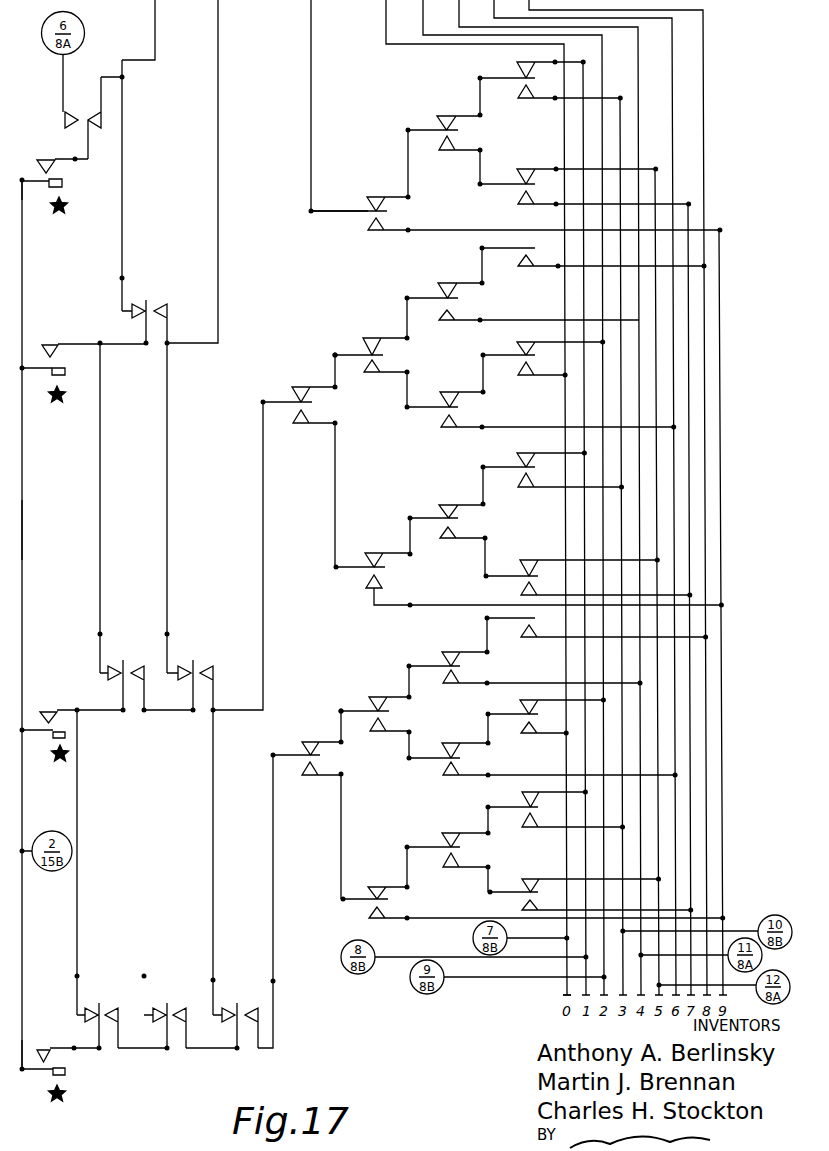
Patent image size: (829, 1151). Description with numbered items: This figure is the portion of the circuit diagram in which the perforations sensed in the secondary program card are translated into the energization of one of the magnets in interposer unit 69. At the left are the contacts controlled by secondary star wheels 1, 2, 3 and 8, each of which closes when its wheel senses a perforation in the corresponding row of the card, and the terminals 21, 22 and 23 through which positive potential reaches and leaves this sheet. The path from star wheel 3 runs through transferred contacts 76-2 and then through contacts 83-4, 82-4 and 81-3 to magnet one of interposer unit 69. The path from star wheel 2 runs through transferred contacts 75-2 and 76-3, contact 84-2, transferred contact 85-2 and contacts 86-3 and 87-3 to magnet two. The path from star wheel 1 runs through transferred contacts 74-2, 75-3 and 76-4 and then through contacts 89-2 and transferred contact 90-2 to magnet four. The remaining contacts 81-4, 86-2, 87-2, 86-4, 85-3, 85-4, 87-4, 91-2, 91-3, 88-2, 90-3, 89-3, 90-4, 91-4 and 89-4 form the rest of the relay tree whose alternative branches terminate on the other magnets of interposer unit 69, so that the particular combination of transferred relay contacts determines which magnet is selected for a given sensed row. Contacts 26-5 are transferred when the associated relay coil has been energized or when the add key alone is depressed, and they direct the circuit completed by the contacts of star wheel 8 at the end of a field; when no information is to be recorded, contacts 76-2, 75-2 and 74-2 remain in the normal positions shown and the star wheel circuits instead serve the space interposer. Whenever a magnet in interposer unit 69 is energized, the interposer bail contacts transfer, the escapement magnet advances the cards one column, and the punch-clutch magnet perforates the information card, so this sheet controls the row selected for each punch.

The terminal 21 is at (15, 109).
The terminal 22 is at (14, 530).
The terminal 23 is at (13, 1054).
The secondary star wheel 8 is at (58, 170).
The secondary star wheel 3 is at (58, 356).
The secondary star wheel 2 is at (56, 722).
The secondary star wheel 1 is at (56, 1063).
The contacts 26-5 is at (92, 106).
The transferred contacts 76-2 is at (176, 292).
The transferred contacts 75-2 is at (150, 654).
The transferred contacts 76-3 is at (224, 654).
The transferred contacts 74-2 is at (132, 996).
The transferred contacts 75-3 is at (197, 996).
The transferred contacts 76-4 is at (264, 996).
The contacts 82-4 is at (433, 117).
The contacts 81-3 is at (510, 95).
The contacts 83-4 is at (363, 196).
The contacts 81-4 is at (515, 200).
The contacts 86-2 is at (452, 265).
The contacts 87-2 is at (510, 270).
The transferred contact 85-2 is at (360, 322).
The contacts 86-3 is at (436, 391).
The contacts 87-3 is at (512, 378).
The contact 84-2 is at (311, 412).
The contacts 86-4 is at (436, 510).
The contacts 85-3 is at (514, 482).
The contacts 85-4 is at (518, 565).
The contacts 87-4 is at (382, 562).
The contacts 91-2 is at (515, 628).
The transferred contact 90-2 is at (460, 660).
The contacts 89-2 is at (388, 706).
The contacts 91-3 is at (518, 726).
The contacts 88-2 is at (322, 753).
The contacts 90-3 is at (460, 765).
The contacts 89-3 is at (520, 798).
The contacts 90-4 is at (460, 841).
The contacts 91-4 is at (390, 895).
The contacts 89-4 is at (521, 894).
The interposer unit 69 is at (558, 1008).